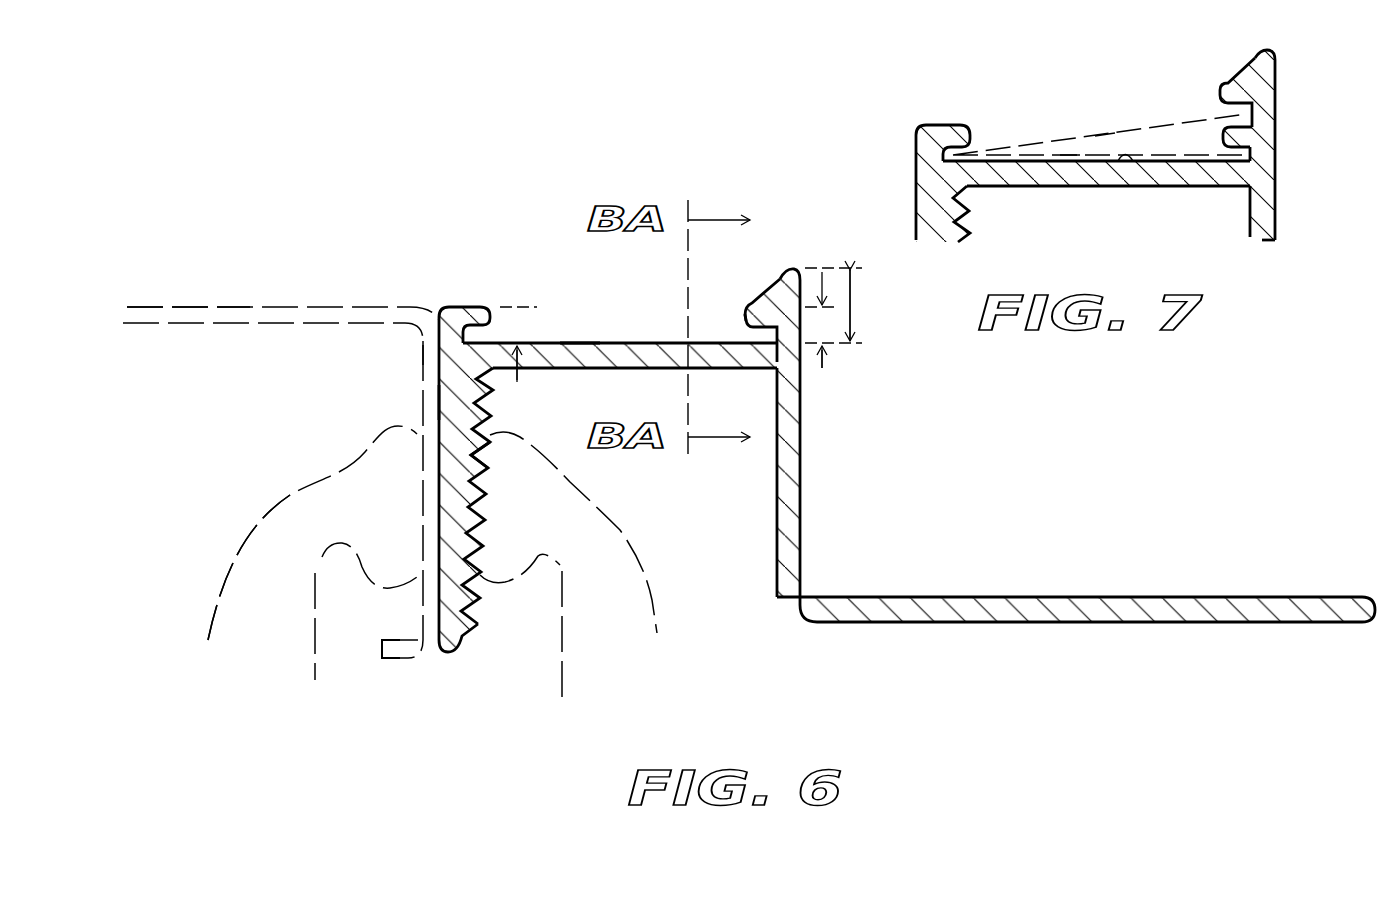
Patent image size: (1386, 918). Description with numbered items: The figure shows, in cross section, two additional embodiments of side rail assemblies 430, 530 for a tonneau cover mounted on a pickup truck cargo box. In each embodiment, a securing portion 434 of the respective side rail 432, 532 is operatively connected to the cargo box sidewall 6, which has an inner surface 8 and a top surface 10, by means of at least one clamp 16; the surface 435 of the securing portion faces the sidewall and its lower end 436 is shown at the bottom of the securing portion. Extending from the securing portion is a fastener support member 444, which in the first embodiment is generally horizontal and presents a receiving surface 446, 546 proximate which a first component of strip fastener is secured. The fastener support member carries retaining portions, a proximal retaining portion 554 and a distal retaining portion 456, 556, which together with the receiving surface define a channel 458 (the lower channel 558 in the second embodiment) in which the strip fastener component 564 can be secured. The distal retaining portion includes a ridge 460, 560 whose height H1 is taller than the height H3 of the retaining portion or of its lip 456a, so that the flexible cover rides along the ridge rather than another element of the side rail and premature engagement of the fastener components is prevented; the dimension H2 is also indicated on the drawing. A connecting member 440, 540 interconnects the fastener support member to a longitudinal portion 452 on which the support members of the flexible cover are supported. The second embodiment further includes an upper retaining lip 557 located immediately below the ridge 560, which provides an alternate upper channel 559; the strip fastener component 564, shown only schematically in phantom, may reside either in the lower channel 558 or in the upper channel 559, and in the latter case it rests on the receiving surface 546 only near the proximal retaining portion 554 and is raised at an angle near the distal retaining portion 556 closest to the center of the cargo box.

In FIG. 6, the sidewall 6 is at (423, 350).
In FIG. 6, the inner surface 8 is at (440, 499).
In FIG. 6, the top surface 10 is at (235, 305).
In FIG. 6, the clamp 16 is at (240, 545).
In FIG. 6, the side rail assembly 430 is at (440, 304).
In FIG. 6, the side rail 432 is at (803, 505).
In FIG. 6, the securing portion 434 is at (495, 408).
In FIG. 6, the outer surface 435 is at (440, 400).
In FIG. 6, the lower end 436 is at (478, 622).
In FIG. 6, the connecting member 440 is at (802, 550).
In FIG. 6, the fastener support member 444 is at (785, 338).
In FIG. 6, the receiving surface 446 is at (650, 342).
In FIG. 6, the longitudinal portion 452 is at (1098, 597).
In FIG. 6, the distal retaining portion 456 is at (463, 304).
In FIG. 6, the lip 456a is at (745, 316).
In FIG. 6, the channel 458 is at (575, 340).
In FIG. 6, the ridge 460 is at (793, 270).
In FIG. 6, the height of ridge H1 is at (852, 305).
In FIG. 6, the height H2 is at (822, 368).
In FIG. 6, the height of retaining portion H3 is at (517, 300).
In FIG. 7, the side rail assembly 530 is at (1280, 105).
In FIG. 7, the side rail 532 is at (970, 232).
In FIG. 7, the connecting member 540 is at (1275, 242).
In FIG. 7, the receiving surface 546 is at (1128, 186).
In FIG. 7, the proximal retaining portion 554 is at (945, 124).
In FIG. 7, the distal retaining portion 556 is at (1222, 135).
In FIG. 7, the upper retaining lip 557 is at (1225, 85).
In FIG. 7, the lower channel 558 is at (1070, 156).
In FIG. 7, the upper channel 559 is at (1105, 128).
In FIG. 7, the ridge 560 is at (1270, 52).
In FIG. 7, the strip fastener component 564 is at (1047, 153).